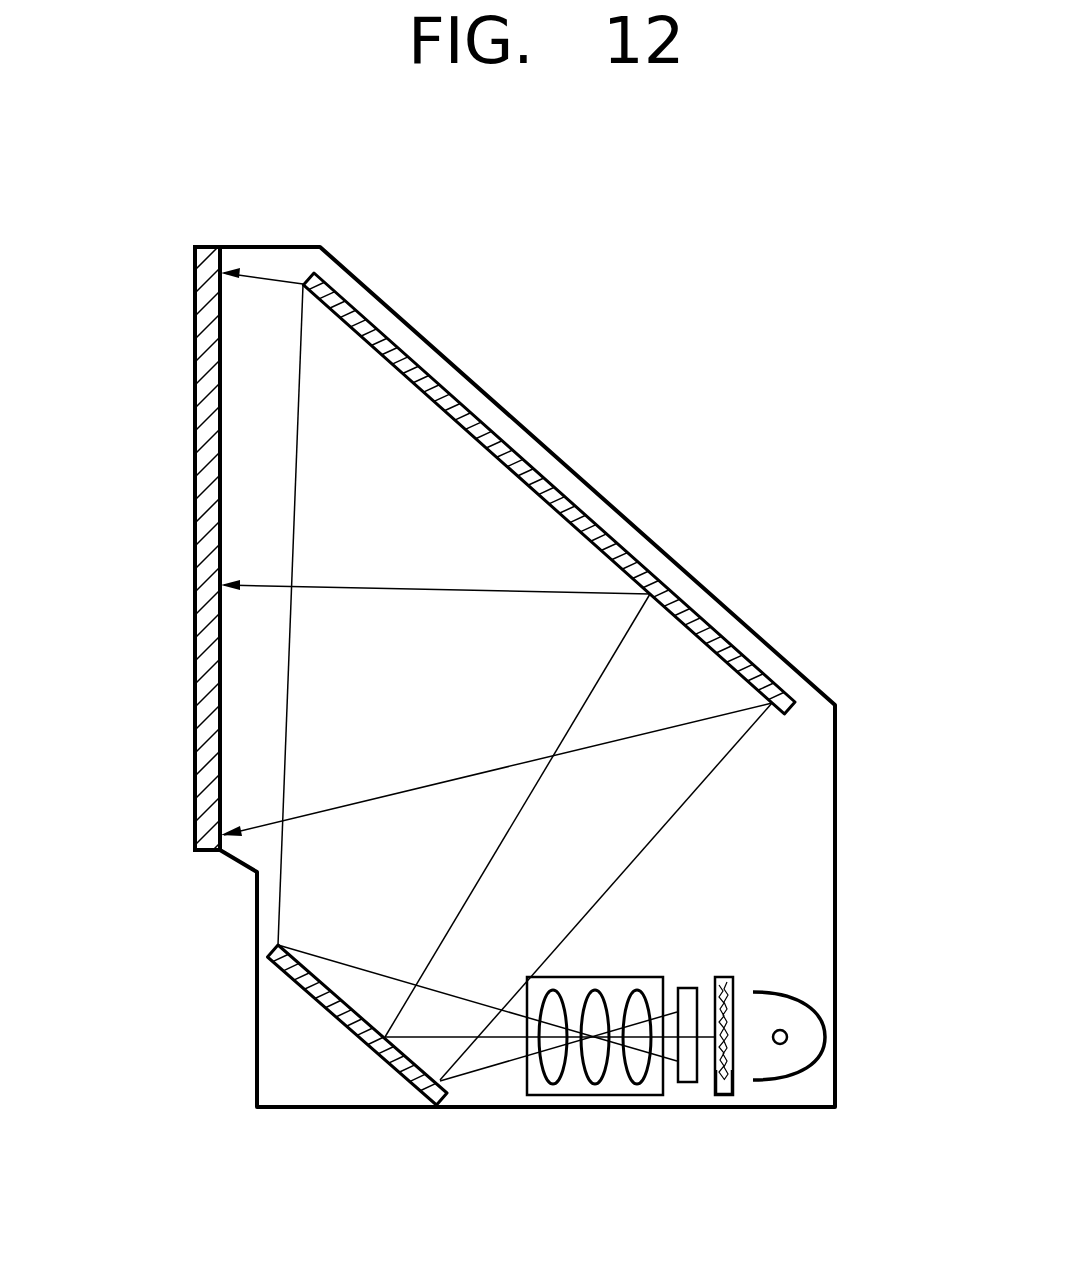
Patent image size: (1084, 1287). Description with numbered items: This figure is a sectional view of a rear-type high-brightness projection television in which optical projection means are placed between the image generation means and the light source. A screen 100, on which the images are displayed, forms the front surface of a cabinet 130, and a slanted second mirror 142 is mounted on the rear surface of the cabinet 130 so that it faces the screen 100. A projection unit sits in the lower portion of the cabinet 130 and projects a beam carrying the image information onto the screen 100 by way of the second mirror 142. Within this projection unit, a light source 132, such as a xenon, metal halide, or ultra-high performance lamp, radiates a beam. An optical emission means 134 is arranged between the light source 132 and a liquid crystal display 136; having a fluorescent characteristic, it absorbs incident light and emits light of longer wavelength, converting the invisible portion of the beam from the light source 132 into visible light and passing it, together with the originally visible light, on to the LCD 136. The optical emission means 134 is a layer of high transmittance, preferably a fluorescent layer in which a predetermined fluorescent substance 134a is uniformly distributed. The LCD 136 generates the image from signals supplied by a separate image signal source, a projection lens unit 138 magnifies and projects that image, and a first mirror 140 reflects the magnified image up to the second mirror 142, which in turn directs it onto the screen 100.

The screen 100 is at (205, 736).
The cabinet 130 is at (257, 1012).
The light source 132 is at (795, 998).
The optical emission means 134 is at (725, 977).
The fluorescent substance 134a is at (727, 1095).
The liquid crystal display (LCD) 136 is at (688, 1082).
The projection lens unit 138 is at (582, 1095).
The first mirror 140 is at (383, 1060).
The second mirror 142 is at (513, 457).